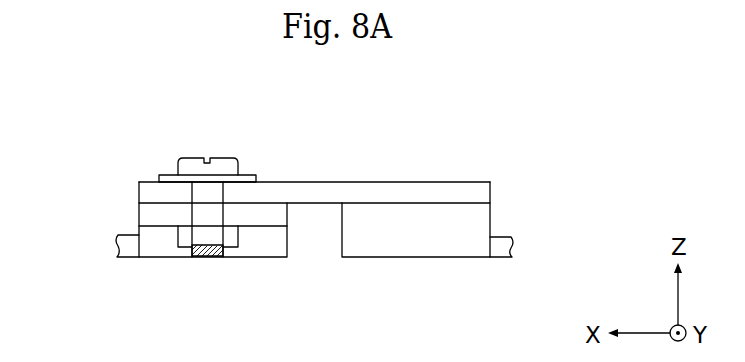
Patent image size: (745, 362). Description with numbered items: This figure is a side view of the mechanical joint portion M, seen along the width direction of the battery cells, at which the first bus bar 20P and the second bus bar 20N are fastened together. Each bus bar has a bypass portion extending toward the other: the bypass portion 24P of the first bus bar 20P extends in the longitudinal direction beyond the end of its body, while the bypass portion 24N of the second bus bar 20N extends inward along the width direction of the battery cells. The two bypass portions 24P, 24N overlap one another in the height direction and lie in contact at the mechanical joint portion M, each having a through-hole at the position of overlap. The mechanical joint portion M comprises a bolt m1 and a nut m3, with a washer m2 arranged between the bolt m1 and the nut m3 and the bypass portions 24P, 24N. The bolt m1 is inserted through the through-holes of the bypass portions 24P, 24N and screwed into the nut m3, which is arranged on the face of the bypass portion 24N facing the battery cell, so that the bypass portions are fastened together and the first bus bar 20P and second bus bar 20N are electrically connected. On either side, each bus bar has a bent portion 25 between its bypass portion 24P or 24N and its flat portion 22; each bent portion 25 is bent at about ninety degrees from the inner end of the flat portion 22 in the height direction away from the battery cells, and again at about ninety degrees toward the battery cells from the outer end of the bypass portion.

The mechanical joint portion M is at (172, 140).
The bolt m1 is at (225, 156).
The washer m2 is at (248, 174).
The nut m3 is at (180, 234).
The first bus bar 20P is at (486, 172).
The bypass portion of the first bus bar 24P is at (405, 182).
The second bus bar 20N is at (120, 226).
The bypass portion of the second bus bar 24N is at (257, 217).
The bent portion 25 is at (490, 218).
The flat portion 22 is at (130, 260).